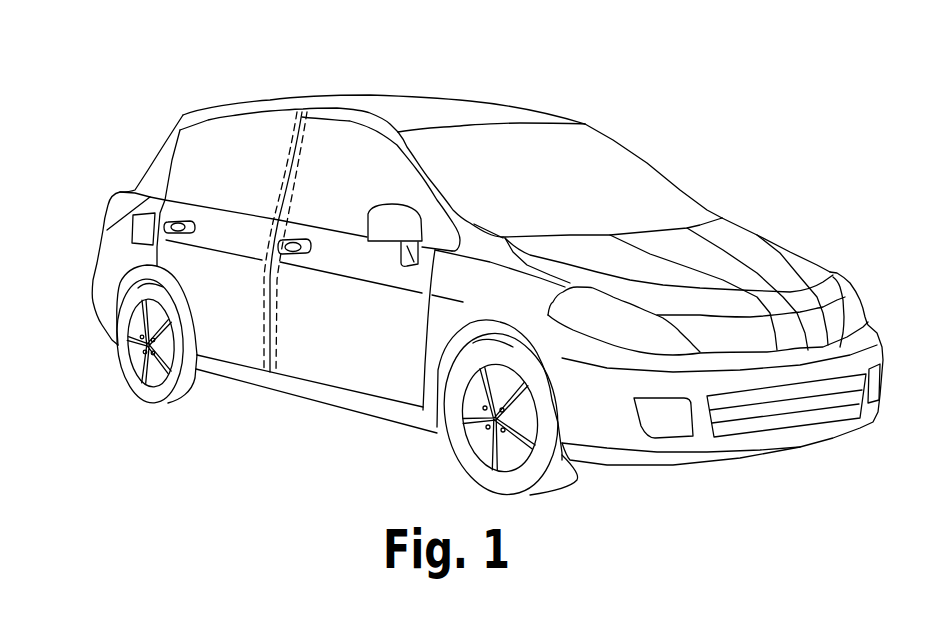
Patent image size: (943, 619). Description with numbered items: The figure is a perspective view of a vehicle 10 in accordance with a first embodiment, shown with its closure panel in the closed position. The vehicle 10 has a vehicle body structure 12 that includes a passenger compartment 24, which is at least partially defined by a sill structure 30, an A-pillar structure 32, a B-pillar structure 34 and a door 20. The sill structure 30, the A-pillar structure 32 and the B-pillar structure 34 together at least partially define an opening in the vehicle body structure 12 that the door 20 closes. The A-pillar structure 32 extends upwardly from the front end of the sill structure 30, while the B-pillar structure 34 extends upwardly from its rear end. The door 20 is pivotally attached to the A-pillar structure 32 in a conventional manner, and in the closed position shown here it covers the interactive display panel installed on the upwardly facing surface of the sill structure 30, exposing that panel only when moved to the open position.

The vehicle 10 is at (487, 260).
The vehicle body structure 12 is at (527, 106).
The door 20 is at (327, 373).
The passenger compartment 24 is at (606, 154).
The sill structure 30 is at (363, 407).
The A-pillar structure 32 is at (430, 181).
The B-pillar structure 34 is at (287, 160).